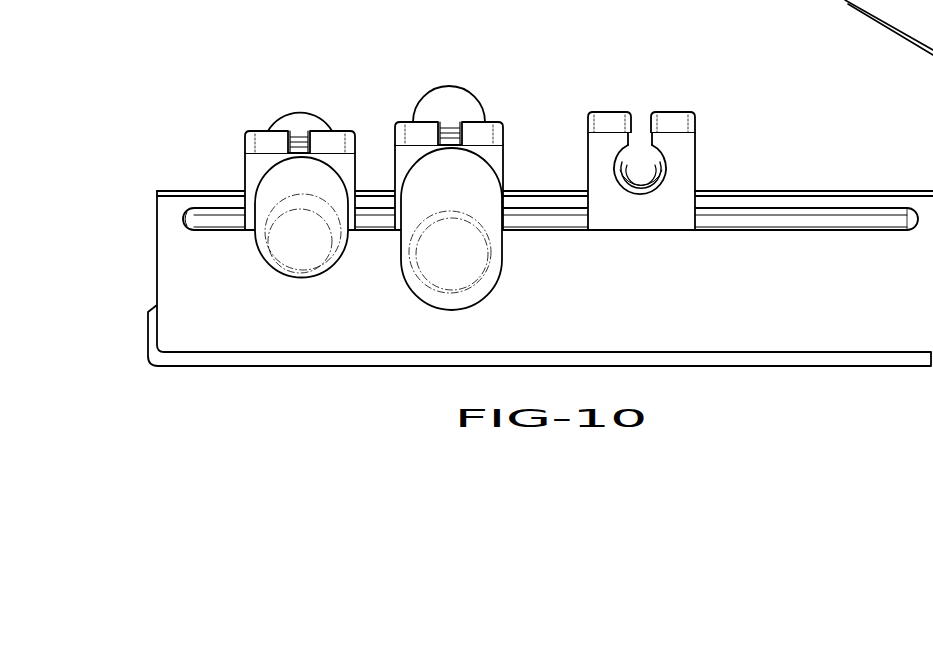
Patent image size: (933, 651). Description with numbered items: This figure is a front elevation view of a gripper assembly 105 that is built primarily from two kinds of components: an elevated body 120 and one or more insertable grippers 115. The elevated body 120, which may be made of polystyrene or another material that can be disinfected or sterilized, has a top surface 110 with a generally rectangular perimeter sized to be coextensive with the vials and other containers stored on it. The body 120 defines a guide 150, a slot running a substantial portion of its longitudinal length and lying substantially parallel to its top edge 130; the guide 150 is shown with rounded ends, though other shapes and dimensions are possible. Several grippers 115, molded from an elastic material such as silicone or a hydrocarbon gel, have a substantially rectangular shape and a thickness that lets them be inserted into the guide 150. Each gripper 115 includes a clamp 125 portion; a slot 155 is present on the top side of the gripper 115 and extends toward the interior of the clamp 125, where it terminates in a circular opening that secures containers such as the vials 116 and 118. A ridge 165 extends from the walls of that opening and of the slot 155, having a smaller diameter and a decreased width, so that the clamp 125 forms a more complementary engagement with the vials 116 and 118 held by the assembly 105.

The gripper assembly 105 is at (184, 136).
The top surface 110 is at (852, 317).
The gripper 115 is at (247, 167).
The vial 116 is at (273, 212).
The vial 118 is at (425, 225).
The elevated body 120 is at (760, 377).
The clamp 125 is at (602, 147).
The top edge 130 is at (882, 192).
The guide 150 is at (787, 222).
The slot 155 is at (636, 114).
The ridge 165 is at (641, 170).